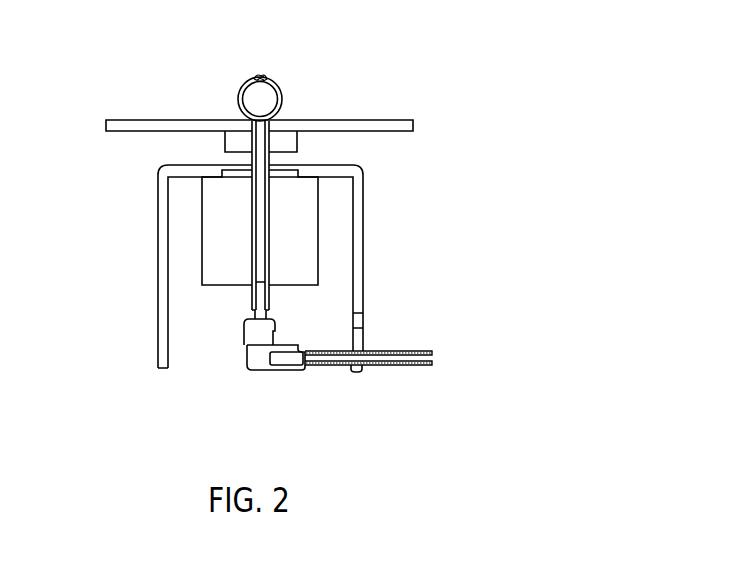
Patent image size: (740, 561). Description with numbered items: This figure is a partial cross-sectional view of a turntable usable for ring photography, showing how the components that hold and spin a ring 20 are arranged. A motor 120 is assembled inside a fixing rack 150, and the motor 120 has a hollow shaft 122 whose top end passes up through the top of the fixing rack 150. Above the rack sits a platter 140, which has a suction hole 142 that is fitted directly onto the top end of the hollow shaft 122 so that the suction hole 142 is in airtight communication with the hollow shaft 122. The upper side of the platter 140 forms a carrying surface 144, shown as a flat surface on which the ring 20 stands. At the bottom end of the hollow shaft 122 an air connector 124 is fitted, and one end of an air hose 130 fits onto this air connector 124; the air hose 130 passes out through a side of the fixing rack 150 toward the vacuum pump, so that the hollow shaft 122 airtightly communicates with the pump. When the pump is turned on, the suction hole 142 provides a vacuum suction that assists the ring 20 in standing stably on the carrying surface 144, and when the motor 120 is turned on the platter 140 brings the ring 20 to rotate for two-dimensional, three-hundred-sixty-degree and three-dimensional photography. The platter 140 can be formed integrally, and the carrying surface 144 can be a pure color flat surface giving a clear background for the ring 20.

The ring 20 is at (247, 90).
The motor 120 is at (231, 277).
The hollow shaft 122 is at (257, 224).
The air connector 124 is at (262, 362).
The air hose 130 is at (400, 365).
The platter 140 is at (375, 120).
The suction hole 142 is at (237, 140).
The carrying surface 144 is at (144, 112).
The fixing rack 150 is at (162, 368).